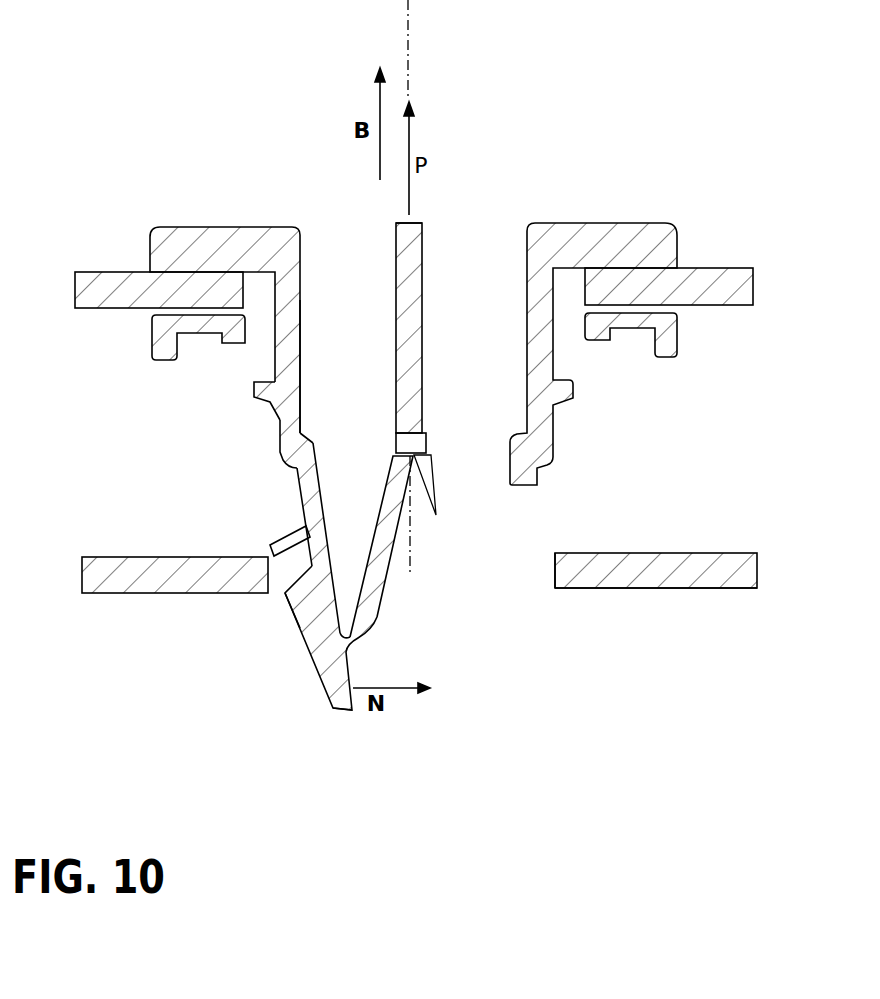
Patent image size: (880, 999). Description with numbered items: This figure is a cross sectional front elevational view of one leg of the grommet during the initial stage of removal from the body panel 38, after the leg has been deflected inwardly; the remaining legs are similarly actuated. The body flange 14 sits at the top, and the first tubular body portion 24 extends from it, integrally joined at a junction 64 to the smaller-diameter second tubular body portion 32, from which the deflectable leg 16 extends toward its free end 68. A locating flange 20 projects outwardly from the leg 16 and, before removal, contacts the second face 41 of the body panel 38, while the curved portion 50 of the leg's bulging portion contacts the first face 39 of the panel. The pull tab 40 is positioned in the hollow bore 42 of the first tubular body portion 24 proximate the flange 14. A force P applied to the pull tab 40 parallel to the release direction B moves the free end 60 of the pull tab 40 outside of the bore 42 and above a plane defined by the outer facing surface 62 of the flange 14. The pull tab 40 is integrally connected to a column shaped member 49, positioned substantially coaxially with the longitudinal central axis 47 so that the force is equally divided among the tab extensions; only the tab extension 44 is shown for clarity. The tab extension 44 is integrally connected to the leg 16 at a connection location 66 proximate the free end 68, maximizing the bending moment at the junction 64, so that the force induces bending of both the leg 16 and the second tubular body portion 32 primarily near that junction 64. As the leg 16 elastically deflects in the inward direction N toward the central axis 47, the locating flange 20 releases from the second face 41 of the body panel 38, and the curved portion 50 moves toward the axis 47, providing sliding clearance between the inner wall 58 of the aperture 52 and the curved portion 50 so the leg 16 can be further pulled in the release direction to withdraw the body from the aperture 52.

The body flange 14 is at (628, 235).
The deflectable leg 16 is at (320, 660).
The locating flange 20 is at (278, 540).
The first tubular body portion 24 is at (292, 352).
The second tubular body portion 32 is at (318, 500).
The body panel 38 is at (618, 556).
The first face of body panel 39 is at (640, 600).
The pull tab 40 is at (432, 300).
The second face of body panel 41 is at (155, 545).
The hollow bore 42 is at (344, 258).
The tab extension 44 is at (385, 560).
The longitudinal central axis 47 is at (412, 38).
The column shaped member 49 is at (427, 440).
The curved portion 50 is at (283, 598).
The aperture 52 is at (517, 573).
The inner wall of aperture 58 is at (546, 578).
The free end of pull tab 60 is at (400, 222).
The outer facing surface of flange 62 is at (248, 215).
The junction 64 is at (303, 433).
The connection location 66 is at (348, 650).
The free end of leg 68 is at (340, 712).